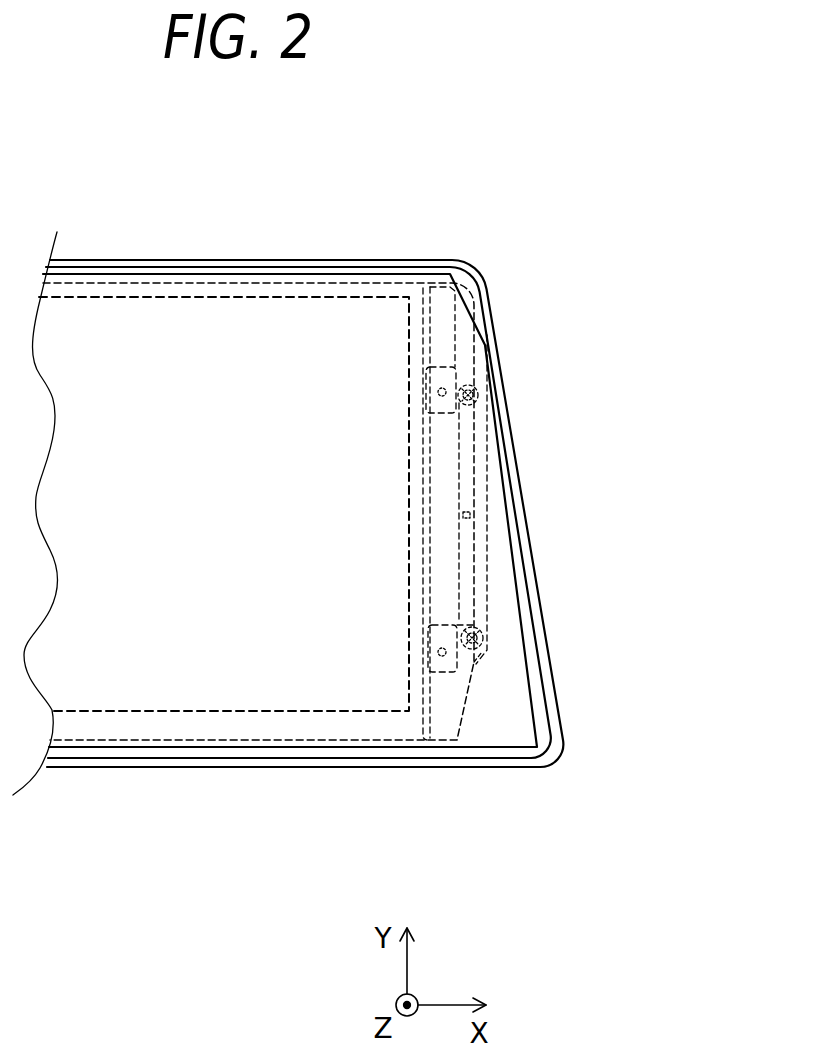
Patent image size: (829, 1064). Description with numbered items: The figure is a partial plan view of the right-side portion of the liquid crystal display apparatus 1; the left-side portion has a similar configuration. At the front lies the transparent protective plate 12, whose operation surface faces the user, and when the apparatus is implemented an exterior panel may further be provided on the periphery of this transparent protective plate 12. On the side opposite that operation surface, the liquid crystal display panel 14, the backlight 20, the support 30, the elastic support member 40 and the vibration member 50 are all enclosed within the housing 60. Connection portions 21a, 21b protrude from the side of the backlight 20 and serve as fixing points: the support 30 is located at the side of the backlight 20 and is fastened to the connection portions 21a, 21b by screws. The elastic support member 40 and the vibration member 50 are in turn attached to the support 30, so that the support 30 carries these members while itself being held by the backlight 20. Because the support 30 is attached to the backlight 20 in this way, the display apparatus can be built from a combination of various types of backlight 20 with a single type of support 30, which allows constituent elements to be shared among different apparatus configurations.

The liquid crystal display apparatus 1 is at (460, 117).
The transparent protective plate 12 is at (515, 747).
The liquid crystal display panel 14 is at (167, 302).
The backlight 20 is at (272, 285).
The connection portion 21a is at (438, 380).
The connection portion 21b is at (442, 672).
The support 30 is at (483, 515).
The elastic support member 40 is at (465, 699).
The vibration member 50 is at (472, 437).
The housing 60 is at (82, 262).